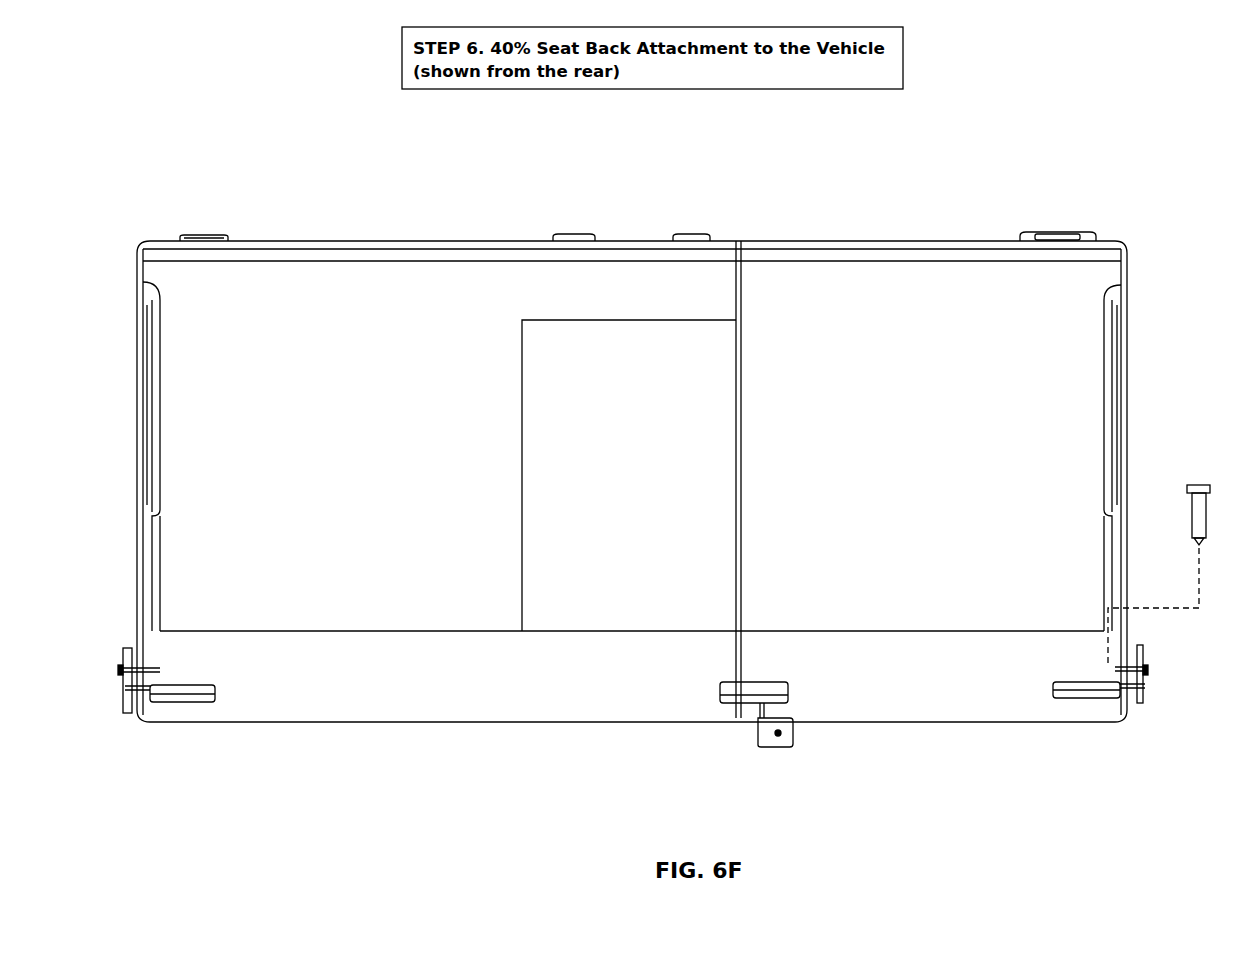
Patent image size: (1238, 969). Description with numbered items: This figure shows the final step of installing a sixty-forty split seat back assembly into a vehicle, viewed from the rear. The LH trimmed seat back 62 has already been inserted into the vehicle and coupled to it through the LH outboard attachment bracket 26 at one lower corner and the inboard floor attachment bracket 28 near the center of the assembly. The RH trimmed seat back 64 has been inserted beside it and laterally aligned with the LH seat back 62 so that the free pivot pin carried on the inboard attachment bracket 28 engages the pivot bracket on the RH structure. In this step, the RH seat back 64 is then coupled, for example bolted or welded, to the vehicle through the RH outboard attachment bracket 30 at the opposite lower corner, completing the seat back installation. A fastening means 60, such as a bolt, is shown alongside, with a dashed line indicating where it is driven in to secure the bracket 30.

The LH outboard attachment bracket 26 is at (125, 723).
The inboard floor attachment bracket 28 is at (768, 740).
The RH outboard attachment bracket 30 is at (1143, 717).
The fastening means 60 is at (1200, 478).
The LH trimmed seat back 62 is at (290, 292).
The RH trimmed seat back 64 is at (962, 285).